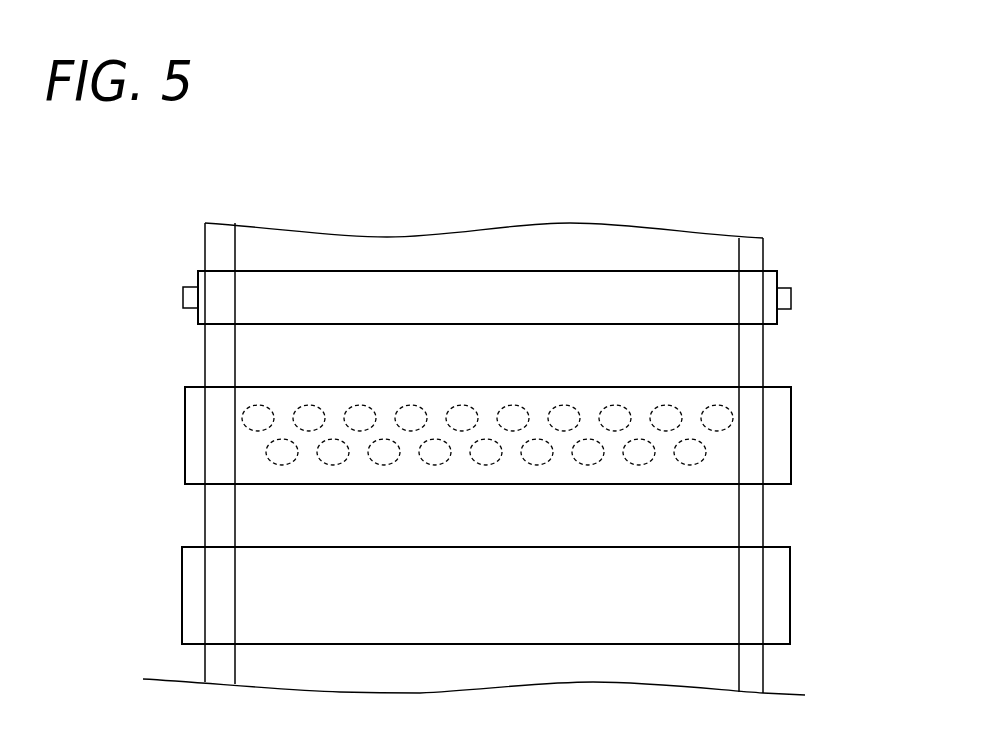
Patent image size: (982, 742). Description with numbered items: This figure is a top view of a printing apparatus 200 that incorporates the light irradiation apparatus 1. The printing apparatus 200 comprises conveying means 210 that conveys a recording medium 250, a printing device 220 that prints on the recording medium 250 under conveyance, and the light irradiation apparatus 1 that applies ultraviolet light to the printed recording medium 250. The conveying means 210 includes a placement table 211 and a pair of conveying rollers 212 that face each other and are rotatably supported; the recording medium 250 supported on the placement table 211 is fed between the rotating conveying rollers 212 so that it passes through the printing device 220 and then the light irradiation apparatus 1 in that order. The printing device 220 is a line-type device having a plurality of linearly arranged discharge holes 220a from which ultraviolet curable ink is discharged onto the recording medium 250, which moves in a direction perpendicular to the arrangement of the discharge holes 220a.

The printing apparatus 200 is at (429, 408).
The conveying means 210 is at (418, 458).
The placement table 211 is at (225, 262).
The conveying rollers 212 is at (225, 283).
The printing device 220 is at (437, 432).
The discharge holes 220a is at (238, 411).
The recording medium 250 is at (263, 247).
The light irradiation apparatus 1 is at (175, 599).